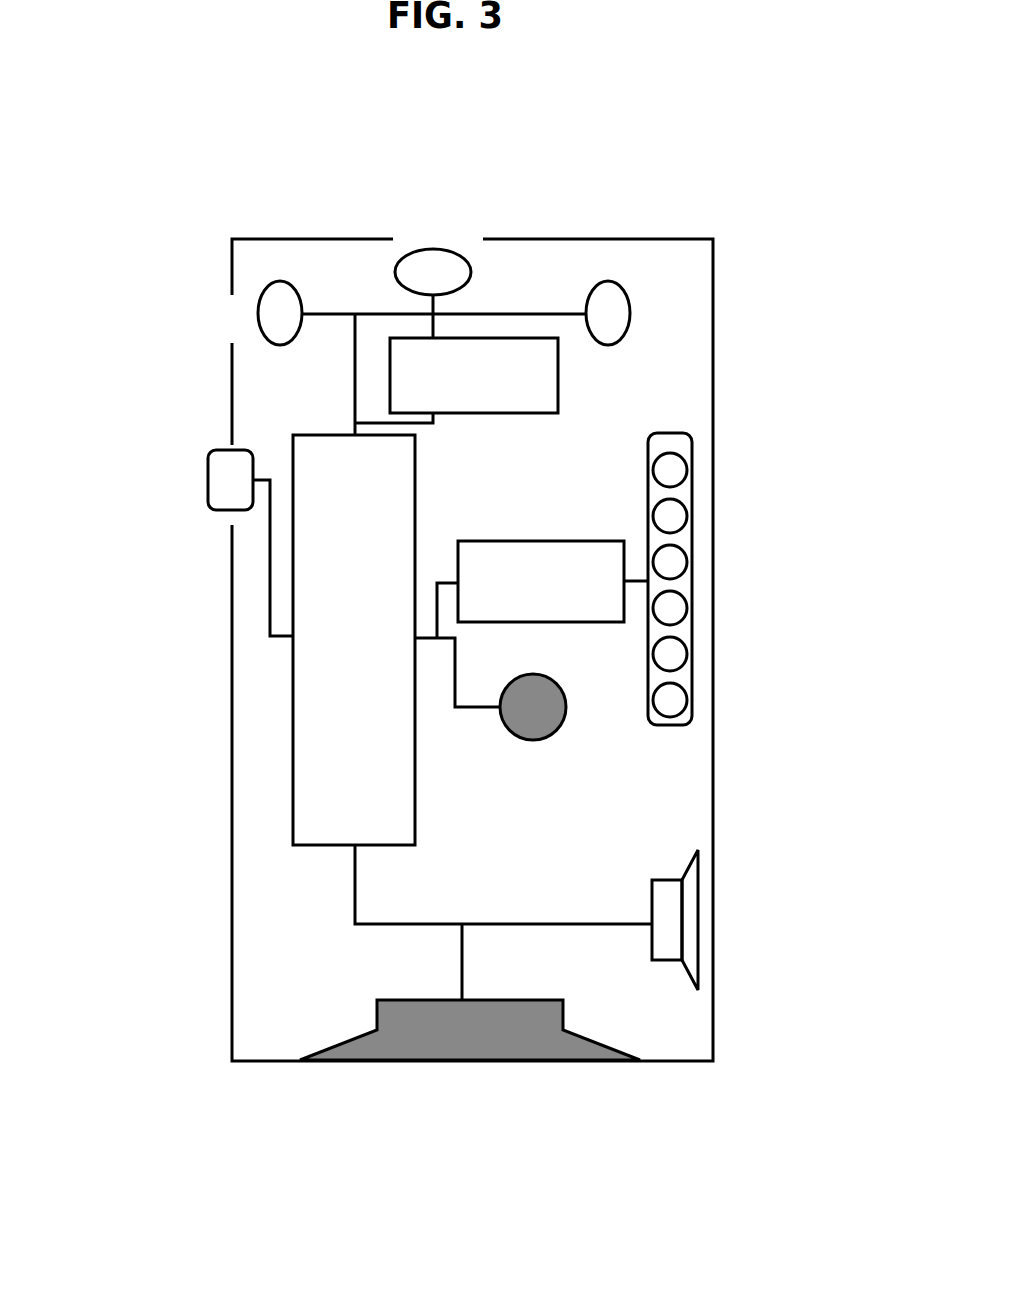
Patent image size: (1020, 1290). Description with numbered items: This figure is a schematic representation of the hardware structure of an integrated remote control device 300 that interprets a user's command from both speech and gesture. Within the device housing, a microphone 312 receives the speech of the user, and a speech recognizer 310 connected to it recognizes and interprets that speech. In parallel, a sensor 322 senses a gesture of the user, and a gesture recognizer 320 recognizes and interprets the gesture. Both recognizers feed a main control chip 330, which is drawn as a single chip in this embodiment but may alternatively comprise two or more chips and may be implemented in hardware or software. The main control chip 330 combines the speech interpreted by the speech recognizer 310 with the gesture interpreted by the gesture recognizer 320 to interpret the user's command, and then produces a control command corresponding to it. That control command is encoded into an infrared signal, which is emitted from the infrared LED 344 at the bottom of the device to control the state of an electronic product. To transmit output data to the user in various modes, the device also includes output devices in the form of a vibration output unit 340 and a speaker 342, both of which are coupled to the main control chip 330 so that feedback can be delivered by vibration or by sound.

The integrated remote control device 300 is at (590, 239).
The speech recognizer 310 is at (560, 378).
The microphone 312 is at (436, 186).
The gesture recognizer 320 is at (507, 541).
The sensor 322 is at (210, 478).
The main control chip 330 is at (290, 680).
The vibration output unit 340 is at (640, 793).
The speaker 342 is at (693, 873).
The infrared light emitting diode (LED) 344 is at (390, 1062).